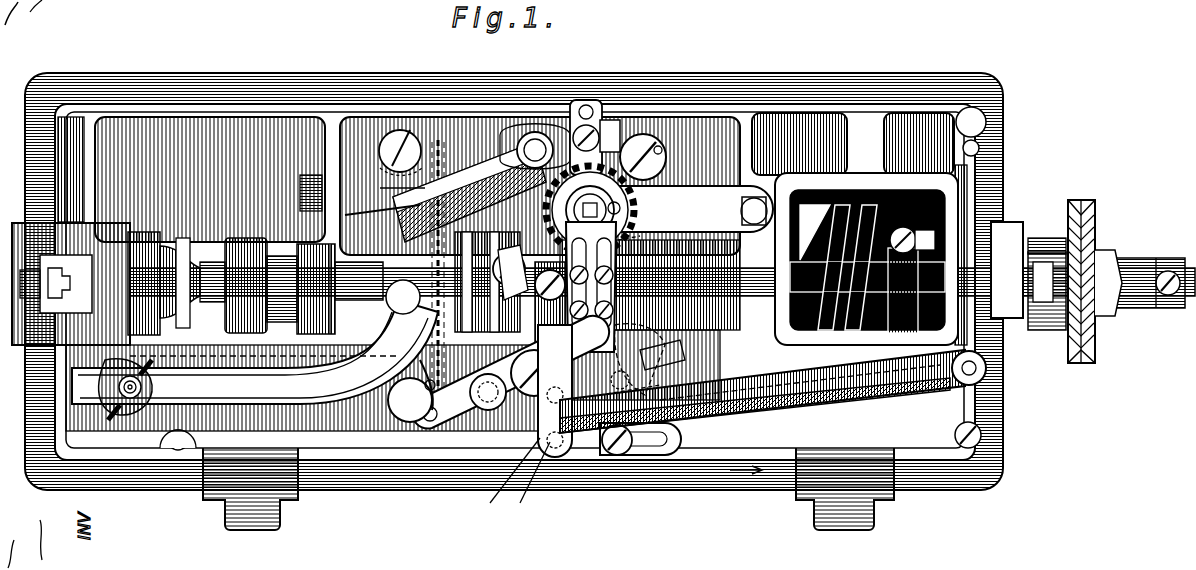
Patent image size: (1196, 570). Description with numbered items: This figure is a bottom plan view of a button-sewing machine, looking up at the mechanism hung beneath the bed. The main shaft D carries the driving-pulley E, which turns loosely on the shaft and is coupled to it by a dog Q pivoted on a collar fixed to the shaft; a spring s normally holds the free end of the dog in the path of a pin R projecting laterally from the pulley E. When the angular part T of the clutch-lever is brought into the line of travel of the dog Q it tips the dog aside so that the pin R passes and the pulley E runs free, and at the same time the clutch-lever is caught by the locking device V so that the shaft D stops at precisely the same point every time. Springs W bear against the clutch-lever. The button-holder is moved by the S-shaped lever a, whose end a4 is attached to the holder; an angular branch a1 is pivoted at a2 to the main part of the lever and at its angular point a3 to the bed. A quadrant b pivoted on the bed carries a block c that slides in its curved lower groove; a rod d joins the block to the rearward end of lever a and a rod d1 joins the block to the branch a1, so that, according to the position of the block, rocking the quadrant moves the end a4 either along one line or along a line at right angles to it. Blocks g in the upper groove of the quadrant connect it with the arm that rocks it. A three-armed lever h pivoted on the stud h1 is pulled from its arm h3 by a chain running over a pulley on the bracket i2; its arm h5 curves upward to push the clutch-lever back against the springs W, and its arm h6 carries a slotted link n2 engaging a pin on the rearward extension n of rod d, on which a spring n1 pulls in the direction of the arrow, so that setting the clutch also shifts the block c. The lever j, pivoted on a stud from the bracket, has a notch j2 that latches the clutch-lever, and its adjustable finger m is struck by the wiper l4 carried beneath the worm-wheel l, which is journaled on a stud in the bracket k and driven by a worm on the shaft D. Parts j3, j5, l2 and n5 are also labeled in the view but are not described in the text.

The button-holder-operating lever a is at (255, 352).
The angular arm a1 is at (469, 191).
The pivot a2 is at (403, 297).
The pivot a3 is at (400, 153).
The lever end a4 is at (125, 389).
The quadrant b is at (662, 350).
The block c is at (610, 136).
The bar d is at (642, 270).
The bar d1 is at (550, 180).
The block g is at (410, 400).
The three-armed lever h is at (488, 392).
The stud h1 is at (534, 373).
The arm h3 is at (441, 412).
The arm h5 is at (534, 298).
The arm h6 is at (533, 481).
The bracket i2 is at (402, 196).
The lever j is at (510, 372).
The notch j2 is at (510, 479).
The cam link j3 is at (638, 352).
The link j5 is at (630, 395).
The bracket k is at (733, 211).
The worm-wheel l is at (652, 205).
The lever arm l2 is at (636, 224).
The cam projection l4 is at (548, 192).
The finger m is at (591, 223).
The extension n is at (625, 458).
The spring n1 is at (800, 430).
The link n2 is at (561, 391).
The screw n5 is at (608, 450).
The spring s is at (535, 146).
The main shaft D is at (782, 290).
The locking device V is at (838, 267).
The angular part T is at (1007, 270).
The dog Q is at (1047, 291).
The pin R is at (1048, 252).
The driving-pulley E is at (1095, 323).
The springs W is at (790, 420).